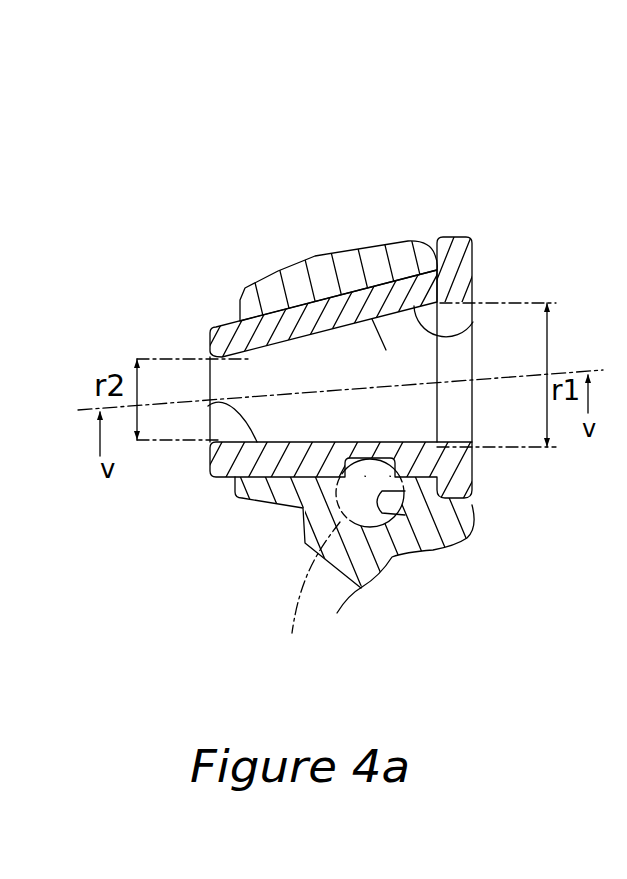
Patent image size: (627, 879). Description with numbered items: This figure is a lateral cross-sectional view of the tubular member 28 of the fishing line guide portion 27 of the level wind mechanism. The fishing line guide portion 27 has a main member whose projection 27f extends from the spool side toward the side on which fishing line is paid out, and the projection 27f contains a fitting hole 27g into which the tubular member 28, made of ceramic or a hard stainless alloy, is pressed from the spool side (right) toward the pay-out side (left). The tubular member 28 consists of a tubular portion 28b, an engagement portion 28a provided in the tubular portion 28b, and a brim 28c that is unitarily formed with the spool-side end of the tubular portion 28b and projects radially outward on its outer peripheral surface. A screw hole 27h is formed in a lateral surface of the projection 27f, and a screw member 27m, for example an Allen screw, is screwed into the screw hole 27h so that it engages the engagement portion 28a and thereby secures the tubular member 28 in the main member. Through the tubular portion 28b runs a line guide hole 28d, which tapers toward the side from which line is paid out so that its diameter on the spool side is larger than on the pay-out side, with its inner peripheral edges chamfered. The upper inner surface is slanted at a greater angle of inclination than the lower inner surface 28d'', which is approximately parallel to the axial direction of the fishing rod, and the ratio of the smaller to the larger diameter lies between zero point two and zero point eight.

The fishing line guide portion 27 is at (252, 166).
The projection 27f is at (322, 258).
The fitting hole 27g is at (318, 381).
The screw hole 27h is at (405, 492).
The screw member 27m is at (309, 597).
The tubular member 28 is at (214, 322).
The engagement portion 28a is at (335, 491).
The tubular portion 28b is at (272, 312).
The brim 28c is at (454, 247).
The line guide hole 28d is at (499, 246).
The lower inner surface 28d'' is at (163, 481).